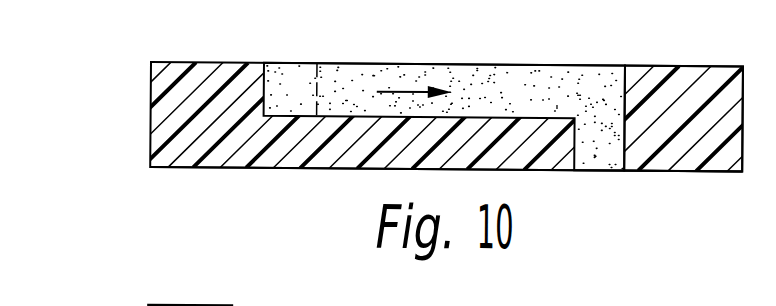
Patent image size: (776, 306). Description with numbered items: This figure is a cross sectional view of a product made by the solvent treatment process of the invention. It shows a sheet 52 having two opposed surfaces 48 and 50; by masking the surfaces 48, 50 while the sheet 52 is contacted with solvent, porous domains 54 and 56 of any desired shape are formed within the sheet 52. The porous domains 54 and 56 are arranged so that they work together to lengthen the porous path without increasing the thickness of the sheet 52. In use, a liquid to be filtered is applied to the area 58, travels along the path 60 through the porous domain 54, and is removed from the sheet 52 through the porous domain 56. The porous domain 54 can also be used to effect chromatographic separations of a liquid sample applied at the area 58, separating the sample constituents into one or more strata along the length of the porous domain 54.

The surface 48 is at (660, 62).
The surface 50 is at (648, 168).
The sheet 52 is at (138, 93).
The porous domain 54 is at (438, 62).
The porous domain 56 is at (598, 168).
The area 58 is at (291, 72).
The path 60 is at (517, 98).